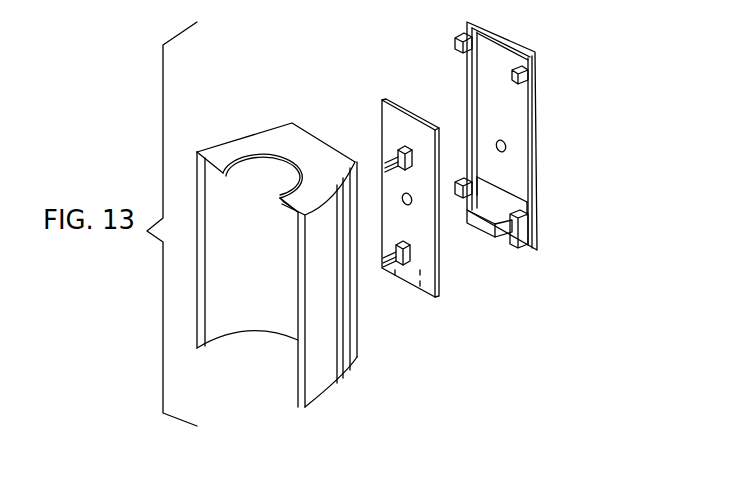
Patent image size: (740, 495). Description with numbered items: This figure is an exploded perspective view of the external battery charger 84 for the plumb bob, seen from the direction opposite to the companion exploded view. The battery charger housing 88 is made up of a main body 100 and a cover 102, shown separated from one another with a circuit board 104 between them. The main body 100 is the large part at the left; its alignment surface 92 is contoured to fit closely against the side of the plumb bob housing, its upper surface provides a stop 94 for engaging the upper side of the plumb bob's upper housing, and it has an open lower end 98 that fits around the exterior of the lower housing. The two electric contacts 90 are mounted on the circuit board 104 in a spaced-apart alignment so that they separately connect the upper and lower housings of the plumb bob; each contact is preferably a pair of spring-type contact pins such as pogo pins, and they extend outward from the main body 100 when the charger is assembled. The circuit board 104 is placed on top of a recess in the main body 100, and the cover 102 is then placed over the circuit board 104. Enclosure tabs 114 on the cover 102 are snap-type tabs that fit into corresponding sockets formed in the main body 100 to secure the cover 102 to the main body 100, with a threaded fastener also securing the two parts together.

The external battery charger 84 is at (558, 95).
The battery charger housing 88 is at (345, 355).
The electric contacts 90 is at (395, 152).
The alignment surface 92 is at (242, 320).
The stop 94 is at (288, 212).
The open lower end 98 is at (275, 360).
The main body 100 is at (327, 375).
The cover 102 is at (532, 173).
The circuit board 104 is at (430, 230).
The enclosure tabs 114 is at (457, 38).